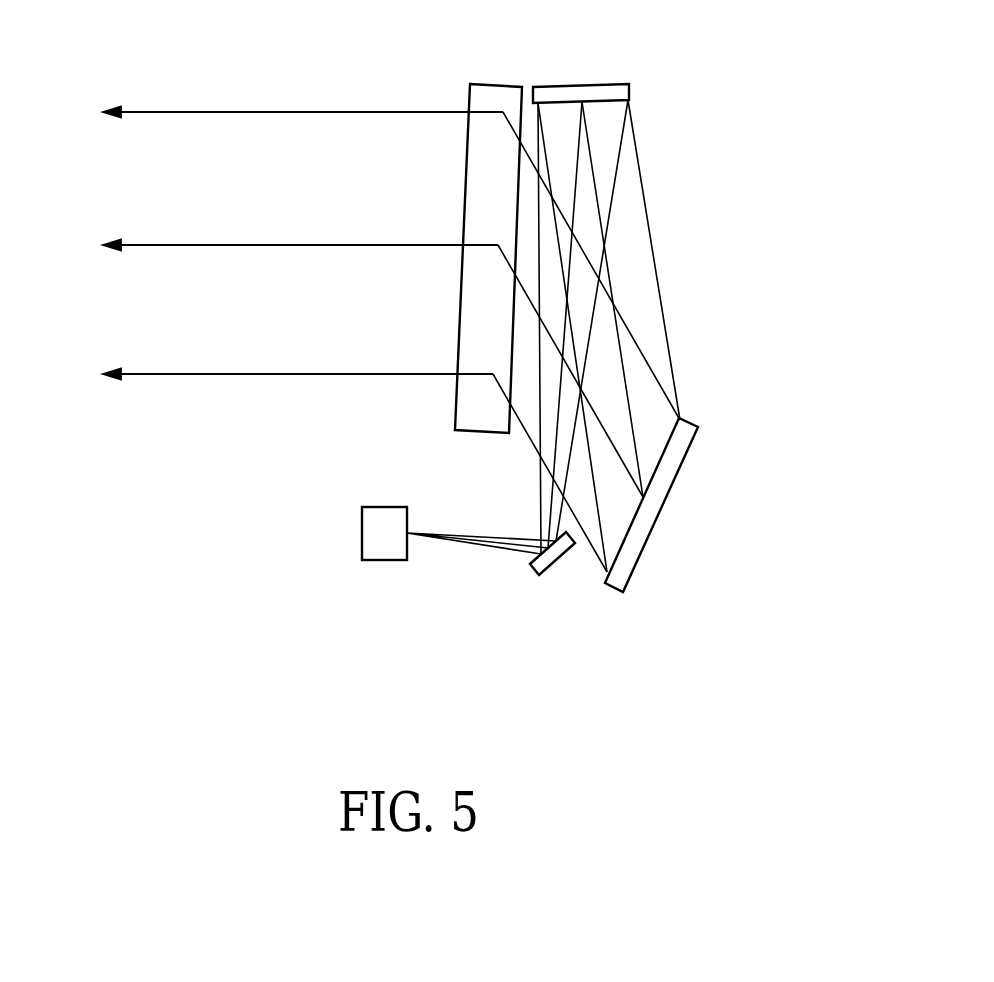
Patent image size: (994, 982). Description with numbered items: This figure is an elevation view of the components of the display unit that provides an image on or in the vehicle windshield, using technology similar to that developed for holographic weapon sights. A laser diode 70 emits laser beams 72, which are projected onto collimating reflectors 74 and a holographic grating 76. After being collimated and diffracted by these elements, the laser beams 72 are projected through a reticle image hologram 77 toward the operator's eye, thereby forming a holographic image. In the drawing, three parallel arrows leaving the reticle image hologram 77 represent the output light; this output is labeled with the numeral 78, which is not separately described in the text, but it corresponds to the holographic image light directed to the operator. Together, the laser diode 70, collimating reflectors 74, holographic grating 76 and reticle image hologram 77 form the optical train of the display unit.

The laser diode 70 is at (384, 562).
The laser beams 72 is at (482, 548).
The collimating reflectors 74 is at (603, 83).
The holographic grating 76 is at (670, 490).
The reticle image hologram 77 is at (498, 83).
The output beams 78 is at (107, 237).